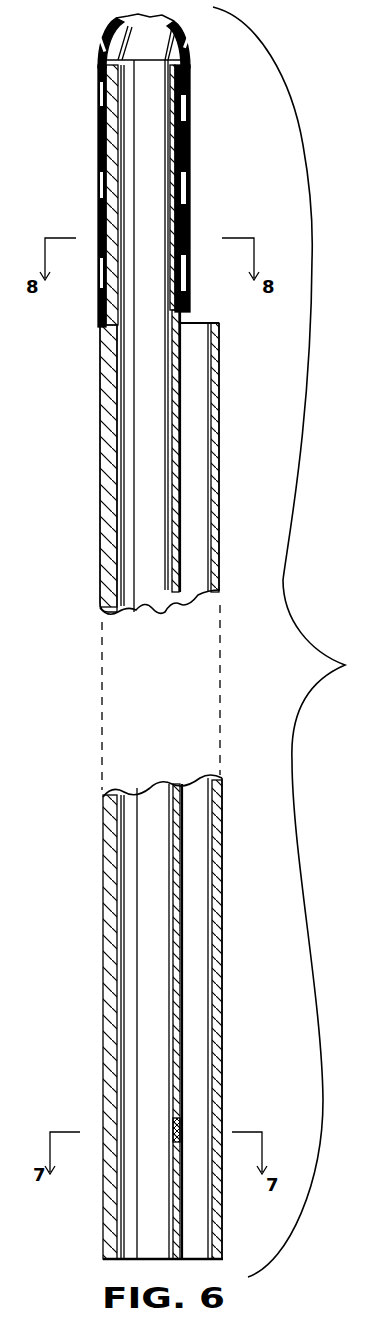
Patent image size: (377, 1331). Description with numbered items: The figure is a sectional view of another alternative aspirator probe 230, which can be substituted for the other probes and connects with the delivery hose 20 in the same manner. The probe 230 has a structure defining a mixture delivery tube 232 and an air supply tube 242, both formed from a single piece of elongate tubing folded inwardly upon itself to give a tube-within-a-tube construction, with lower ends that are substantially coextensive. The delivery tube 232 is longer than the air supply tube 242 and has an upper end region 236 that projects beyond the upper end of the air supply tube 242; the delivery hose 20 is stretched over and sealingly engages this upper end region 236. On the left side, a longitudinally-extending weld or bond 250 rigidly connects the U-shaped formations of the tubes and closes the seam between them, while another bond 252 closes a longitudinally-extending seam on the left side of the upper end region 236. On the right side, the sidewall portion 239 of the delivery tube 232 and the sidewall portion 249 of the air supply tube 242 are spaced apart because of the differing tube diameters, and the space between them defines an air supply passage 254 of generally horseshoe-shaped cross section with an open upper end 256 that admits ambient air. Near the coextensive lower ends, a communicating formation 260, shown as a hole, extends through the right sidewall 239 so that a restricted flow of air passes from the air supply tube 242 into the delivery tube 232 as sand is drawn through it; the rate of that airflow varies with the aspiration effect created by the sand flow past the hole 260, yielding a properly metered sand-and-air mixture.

The delivery hose 20 is at (97, 145).
The probe 230 is at (94, 610).
The mixture delivery tube 232 is at (195, 383).
The upper end region 236 is at (172, 145).
The sidewall portion 239 is at (147, 608).
The air supply tube 242 is at (231, 399).
The sidewall portion 249 is at (222, 572).
The bond 250 is at (100, 447).
The bond 252 is at (131, 201).
The air supply passage 254 is at (200, 470).
The open upper end 256 is at (197, 322).
The communicating formation 260 is at (183, 1132).